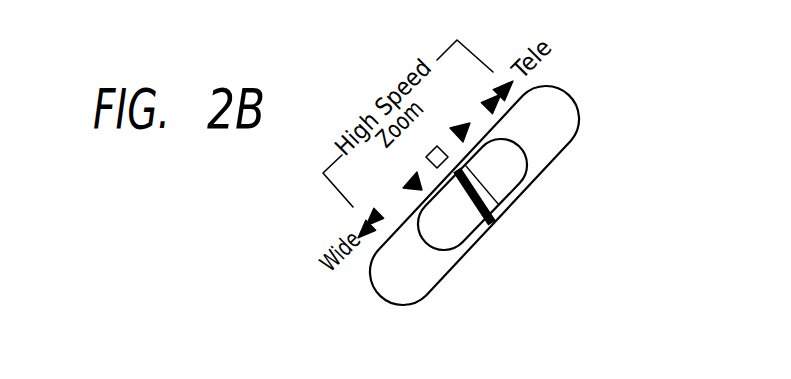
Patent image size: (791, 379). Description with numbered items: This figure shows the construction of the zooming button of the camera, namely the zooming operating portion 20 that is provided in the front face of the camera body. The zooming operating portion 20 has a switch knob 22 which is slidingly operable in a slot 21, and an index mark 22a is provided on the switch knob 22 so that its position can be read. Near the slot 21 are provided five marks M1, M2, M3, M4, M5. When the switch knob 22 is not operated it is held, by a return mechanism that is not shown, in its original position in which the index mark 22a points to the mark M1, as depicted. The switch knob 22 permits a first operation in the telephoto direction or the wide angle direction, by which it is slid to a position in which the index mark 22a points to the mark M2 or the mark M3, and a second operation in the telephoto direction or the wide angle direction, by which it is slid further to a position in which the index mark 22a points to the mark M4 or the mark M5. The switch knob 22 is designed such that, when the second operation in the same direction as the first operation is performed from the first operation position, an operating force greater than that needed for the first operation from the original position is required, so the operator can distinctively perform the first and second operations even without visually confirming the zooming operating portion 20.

The zooming operating portion 20 is at (509, 266).
The slot 21 is at (425, 277).
The switch knob 22 is at (457, 241).
The index mark 22a is at (499, 205).
The mark M1 is at (426, 157).
The mark M2 is at (463, 126).
The mark M3 is at (412, 189).
The mark M4 is at (503, 82).
The mark M5 is at (360, 228).